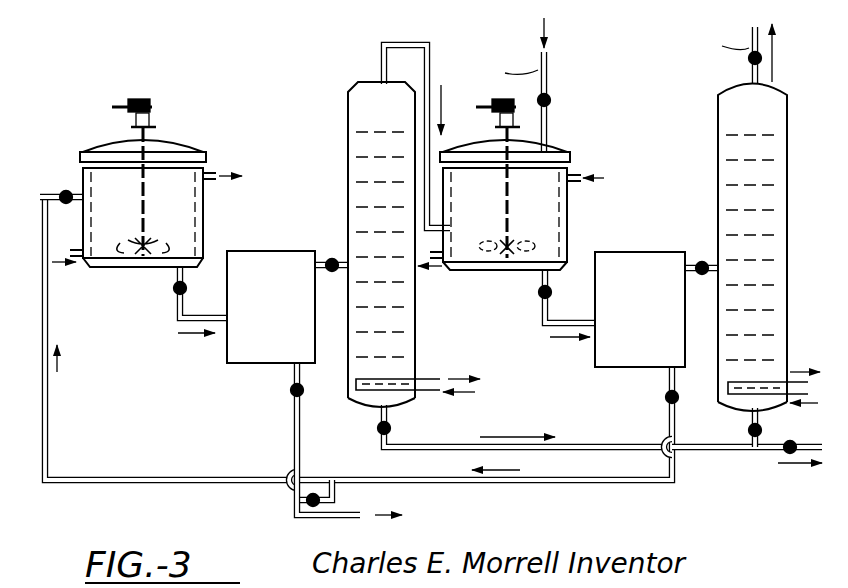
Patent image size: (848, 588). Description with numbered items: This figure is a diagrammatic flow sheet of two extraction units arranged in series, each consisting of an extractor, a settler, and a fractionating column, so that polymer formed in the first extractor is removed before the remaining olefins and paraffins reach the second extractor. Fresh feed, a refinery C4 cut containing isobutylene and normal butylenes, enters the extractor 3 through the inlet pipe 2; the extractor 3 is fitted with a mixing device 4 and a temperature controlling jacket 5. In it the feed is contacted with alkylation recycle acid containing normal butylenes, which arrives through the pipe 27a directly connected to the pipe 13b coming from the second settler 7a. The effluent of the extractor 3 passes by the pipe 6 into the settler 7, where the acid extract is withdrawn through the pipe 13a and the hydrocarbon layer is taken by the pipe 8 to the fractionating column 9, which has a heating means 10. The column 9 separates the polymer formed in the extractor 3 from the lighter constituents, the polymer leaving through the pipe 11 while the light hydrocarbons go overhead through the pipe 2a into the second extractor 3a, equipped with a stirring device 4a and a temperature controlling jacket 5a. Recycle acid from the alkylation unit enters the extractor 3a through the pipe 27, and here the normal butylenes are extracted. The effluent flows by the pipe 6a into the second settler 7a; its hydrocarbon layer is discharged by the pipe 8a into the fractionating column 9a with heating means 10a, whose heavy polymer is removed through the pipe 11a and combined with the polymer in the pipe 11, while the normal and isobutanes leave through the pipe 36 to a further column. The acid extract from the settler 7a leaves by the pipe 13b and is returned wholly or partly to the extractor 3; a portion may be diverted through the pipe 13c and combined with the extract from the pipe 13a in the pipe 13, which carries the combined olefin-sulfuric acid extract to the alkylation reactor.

The inlet pipe 2 is at (40, 170).
The extractor 3 is at (172, 190).
The mixing device 4 is at (130, 265).
The temperature controlling jacket 5 is at (196, 225).
The pipe 6 is at (178, 321).
The settler 7 is at (232, 268).
The pipe 8 is at (326, 269).
The fractionating column 9 is at (348, 196).
The pipe 2a is at (382, 64).
The heating means 10 is at (418, 380).
The pipe 11 is at (416, 447).
The pipe 13 is at (295, 500).
The pipe 13a is at (300, 437).
The pipe 13b is at (668, 393).
The pipe 13c is at (317, 493).
The pipe 27 is at (549, 131).
The pipe 27a is at (49, 441).
The second extractor 3a is at (545, 186).
The stirring device 4a is at (463, 268).
The temperature controlling jacket 5a is at (568, 226).
The pipe 6a is at (544, 321).
The second settler 7a is at (618, 262).
The pipe 8a is at (702, 262).
The fractionating column 9a is at (730, 156).
The heating means 10a is at (727, 392).
The pipe 11a is at (762, 446).
The pipe 36 is at (750, 78).